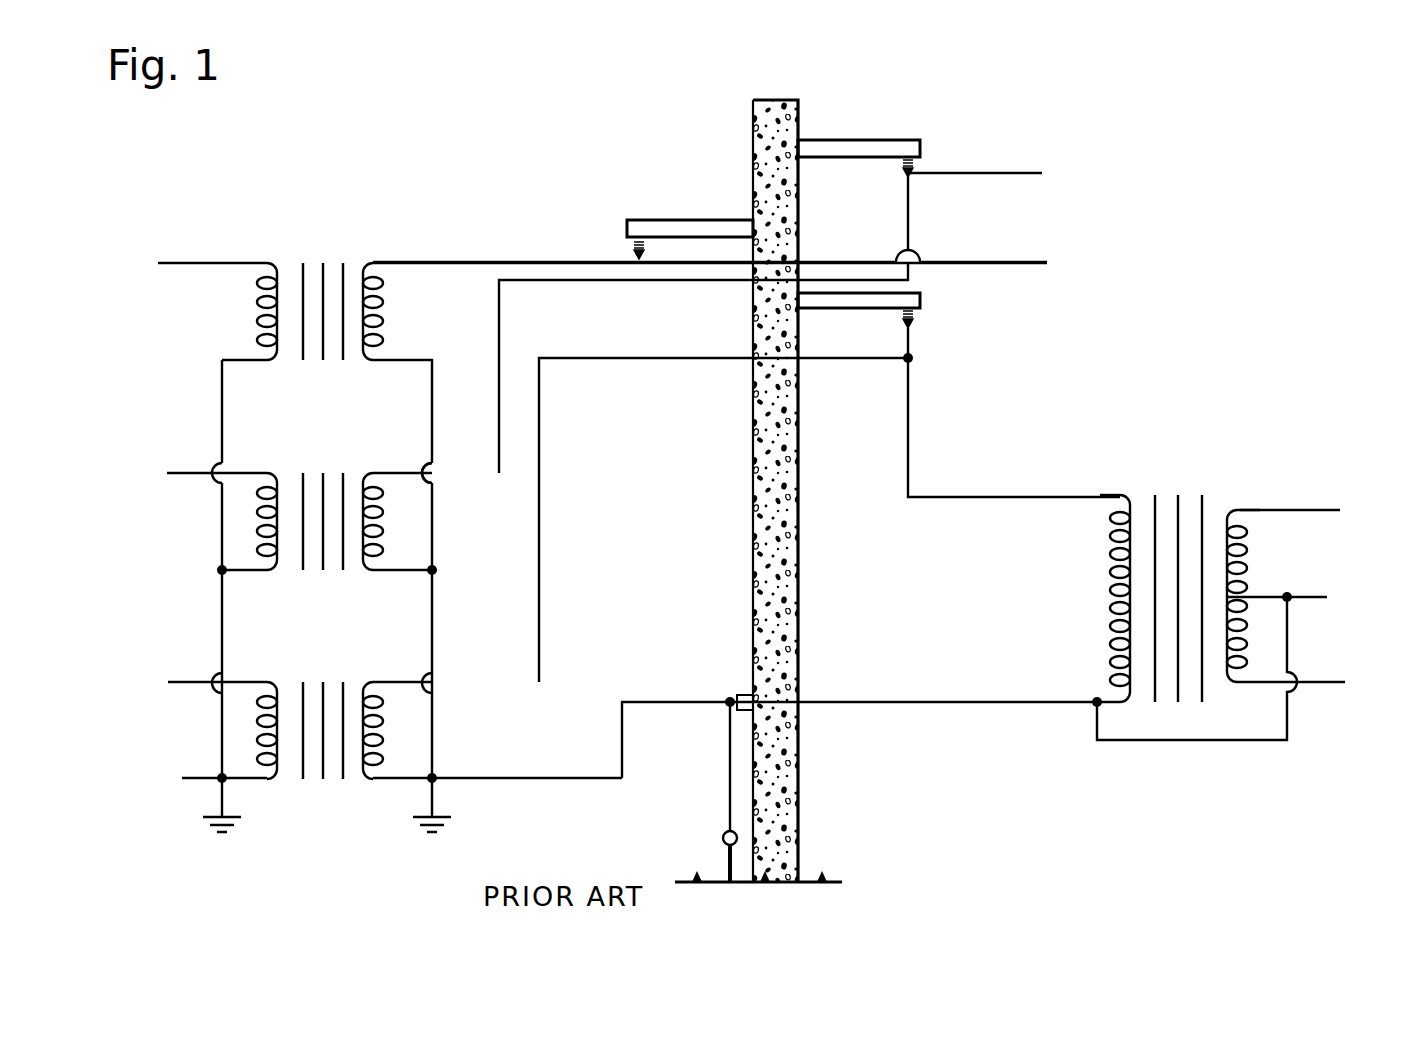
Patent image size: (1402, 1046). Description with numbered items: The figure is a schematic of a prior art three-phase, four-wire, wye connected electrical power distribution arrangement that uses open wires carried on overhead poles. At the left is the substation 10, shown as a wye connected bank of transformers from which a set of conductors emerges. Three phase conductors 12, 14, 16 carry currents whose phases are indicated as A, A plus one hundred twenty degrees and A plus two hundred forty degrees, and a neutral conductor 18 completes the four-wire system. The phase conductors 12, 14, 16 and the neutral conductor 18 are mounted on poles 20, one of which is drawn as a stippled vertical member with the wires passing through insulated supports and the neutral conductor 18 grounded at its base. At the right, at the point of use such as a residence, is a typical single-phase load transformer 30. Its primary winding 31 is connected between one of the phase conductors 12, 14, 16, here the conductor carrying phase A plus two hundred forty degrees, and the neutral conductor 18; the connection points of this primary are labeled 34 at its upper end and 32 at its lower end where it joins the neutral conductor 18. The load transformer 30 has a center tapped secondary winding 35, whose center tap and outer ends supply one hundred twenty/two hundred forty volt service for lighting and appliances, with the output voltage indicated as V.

The substation 10 is at (361, 822).
The phase conductor 12 is at (577, 262).
The phase conductor 14 is at (684, 280).
The phase conductor 16 is at (700, 358).
The neutral conductor 18 is at (727, 703).
The pole 20 is at (786, 790).
The load transformer 30 is at (1192, 627).
The primary winding 31 is at (1118, 585).
The primary winding terminal 32 is at (1093, 710).
The primary winding terminal 34 is at (1130, 490).
The center tapped secondary winding 35 is at (1253, 503).